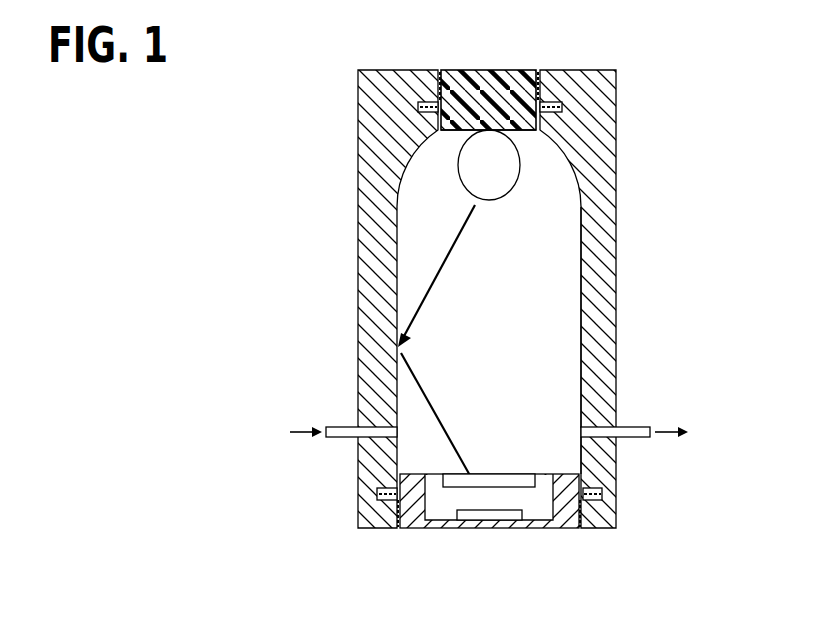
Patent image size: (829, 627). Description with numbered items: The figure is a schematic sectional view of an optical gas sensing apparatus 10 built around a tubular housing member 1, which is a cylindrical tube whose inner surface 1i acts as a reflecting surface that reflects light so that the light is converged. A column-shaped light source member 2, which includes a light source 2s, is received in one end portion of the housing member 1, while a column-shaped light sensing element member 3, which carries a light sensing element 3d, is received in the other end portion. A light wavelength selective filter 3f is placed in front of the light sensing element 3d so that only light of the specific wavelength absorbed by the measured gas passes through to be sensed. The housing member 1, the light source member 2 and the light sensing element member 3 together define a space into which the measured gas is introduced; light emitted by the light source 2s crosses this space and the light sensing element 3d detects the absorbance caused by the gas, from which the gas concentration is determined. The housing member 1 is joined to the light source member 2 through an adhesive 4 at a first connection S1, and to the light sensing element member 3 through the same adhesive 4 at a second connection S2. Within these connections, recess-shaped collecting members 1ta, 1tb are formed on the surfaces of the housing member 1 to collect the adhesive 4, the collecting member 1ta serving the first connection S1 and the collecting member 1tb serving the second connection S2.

The optical gas sensing apparatus 10 is at (336, 61).
The housing member 1 is at (600, 343).
The inner surface 1i is at (583, 264).
The collecting member 1ta is at (553, 108).
The collecting member 1tb is at (598, 490).
The light source member 2 is at (493, 75).
The light source 2s is at (488, 152).
The light sensing element member 3 is at (533, 528).
The light sensing element 3d is at (490, 515).
The light wavelength selective filter 3f is at (452, 480).
The adhesive 4 is at (543, 88).
The first connection S1 is at (537, 62).
The second connection S2 is at (580, 540).